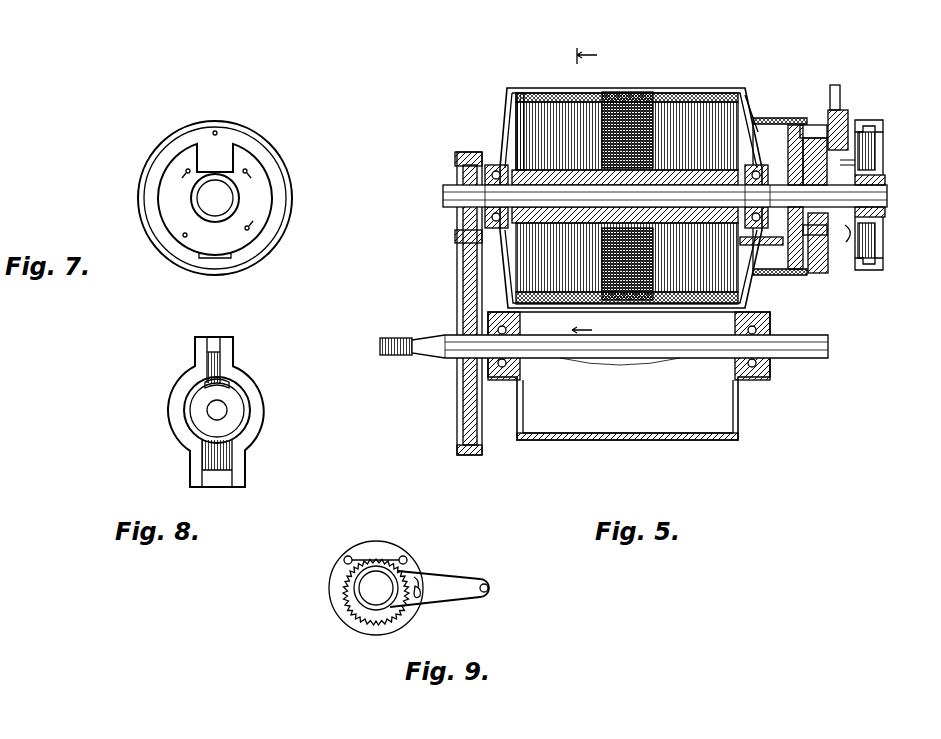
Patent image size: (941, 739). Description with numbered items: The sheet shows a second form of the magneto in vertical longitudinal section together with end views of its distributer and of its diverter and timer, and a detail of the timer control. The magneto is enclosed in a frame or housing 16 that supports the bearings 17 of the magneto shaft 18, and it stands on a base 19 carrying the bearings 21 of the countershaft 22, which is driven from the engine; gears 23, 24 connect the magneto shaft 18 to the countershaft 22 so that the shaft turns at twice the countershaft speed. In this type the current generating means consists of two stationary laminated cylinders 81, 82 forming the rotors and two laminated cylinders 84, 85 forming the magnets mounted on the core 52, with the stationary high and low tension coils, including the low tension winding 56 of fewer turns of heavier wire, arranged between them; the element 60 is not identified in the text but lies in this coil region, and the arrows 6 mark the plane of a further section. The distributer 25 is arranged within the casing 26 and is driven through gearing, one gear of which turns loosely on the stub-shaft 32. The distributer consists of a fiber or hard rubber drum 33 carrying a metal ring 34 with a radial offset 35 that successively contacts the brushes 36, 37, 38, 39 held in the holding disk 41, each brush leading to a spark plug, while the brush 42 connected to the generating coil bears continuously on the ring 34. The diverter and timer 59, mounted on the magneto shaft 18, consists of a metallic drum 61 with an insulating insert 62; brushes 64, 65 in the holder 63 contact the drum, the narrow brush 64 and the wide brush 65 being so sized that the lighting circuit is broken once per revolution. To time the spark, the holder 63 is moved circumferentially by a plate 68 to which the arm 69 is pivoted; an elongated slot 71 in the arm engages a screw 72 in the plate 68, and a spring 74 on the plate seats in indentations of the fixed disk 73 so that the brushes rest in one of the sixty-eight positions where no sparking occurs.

In FIG. 5, the section line 6 is at (590, 193).
In FIG. 5, the frame or housing 16 is at (507, 118).
In FIG. 5, the bearings 17 is at (495, 165).
In FIG. 5, the magneto shaft 18 is at (443, 195).
In FIG. 5, the base 19 is at (660, 433).
In FIG. 5, the bearings 21 is at (765, 395).
In FIG. 5, the countershaft 22 is at (628, 347).
In FIG. 5, the gear 23 is at (463, 287).
In FIG. 5, the gear 24 is at (462, 167).
In FIG. 7, the distributer 25 is at (292, 178).
In FIG. 5, the distributer 25 is at (795, 125).
In FIG. 5, the casing 26 is at (773, 118).
In FIG. 5, the stub-shaft 32 is at (767, 245).
In FIG. 7, the drum 33 is at (255, 141).
In FIG. 7, the metal ring 34 is at (162, 171).
In FIG. 7, the radial offset 35 is at (215, 159).
In FIG. 7, the brush 36 is at (177, 184).
In FIG. 7, the brush 37 is at (187, 235).
In FIG. 7, the brush 38 is at (256, 218).
In FIG. 7, the brush 39 is at (252, 181).
In FIG. 5, the holding disk 41 is at (818, 273).
In FIG. 7, the brush 42 is at (215, 131).
In FIG. 5, the brush 42 is at (832, 100).
In FIG. 5, the core 52 is at (693, 210).
In FIG. 5, the low tension winding 56 is at (615, 92).
In FIG. 8, the diverter and timer 59 is at (250, 410).
In FIG. 5, the diverter and timer 59 is at (885, 180).
In FIG. 5, the coil 60 is at (628, 120).
In FIG. 8, the metallic drum 61 is at (238, 397).
In FIG. 8, the insert 62 is at (205, 386).
In FIG. 8, the holder 63 is at (234, 352).
In FIG. 5, the holder 63 is at (883, 126).
In FIG. 8, the brush 64 is at (214, 363).
In FIG. 5, the brush 64 is at (875, 150).
In FIG. 8, the brush 65 is at (216, 452).
In FIG. 5, the brush 65 is at (883, 240).
In FIG. 9, the plate 68 is at (384, 541).
In FIG. 5, the plate 68 is at (843, 155).
In FIG. 9, the arm 69 is at (462, 578).
In FIG. 9, the elongated slot 71 is at (418, 577).
In FIG. 9, the screw 72 is at (420, 596).
In FIG. 9, the fixed disk 73 is at (364, 602).
In FIG. 5, the fixed disk 73 is at (847, 242).
In FIG. 9, the spring 74 is at (356, 557).
In FIG. 5, the stationary laminated cylinder 81 is at (530, 95).
In FIG. 5, the stationary laminated cylinder 82 is at (700, 95).
In FIG. 5, the laminated cylinder 84 is at (535, 127).
In FIG. 5, the laminated cylinder 85 is at (745, 115).